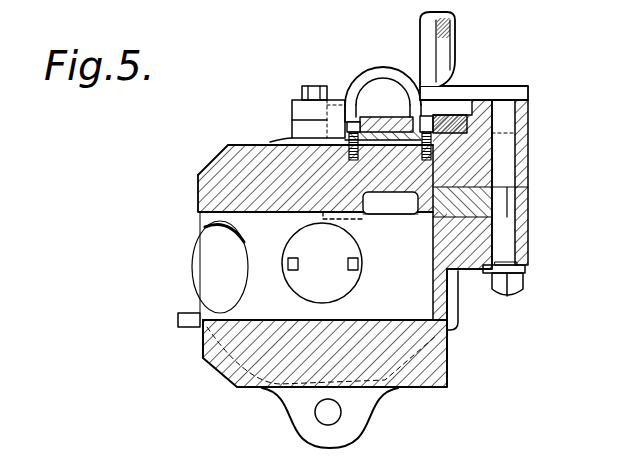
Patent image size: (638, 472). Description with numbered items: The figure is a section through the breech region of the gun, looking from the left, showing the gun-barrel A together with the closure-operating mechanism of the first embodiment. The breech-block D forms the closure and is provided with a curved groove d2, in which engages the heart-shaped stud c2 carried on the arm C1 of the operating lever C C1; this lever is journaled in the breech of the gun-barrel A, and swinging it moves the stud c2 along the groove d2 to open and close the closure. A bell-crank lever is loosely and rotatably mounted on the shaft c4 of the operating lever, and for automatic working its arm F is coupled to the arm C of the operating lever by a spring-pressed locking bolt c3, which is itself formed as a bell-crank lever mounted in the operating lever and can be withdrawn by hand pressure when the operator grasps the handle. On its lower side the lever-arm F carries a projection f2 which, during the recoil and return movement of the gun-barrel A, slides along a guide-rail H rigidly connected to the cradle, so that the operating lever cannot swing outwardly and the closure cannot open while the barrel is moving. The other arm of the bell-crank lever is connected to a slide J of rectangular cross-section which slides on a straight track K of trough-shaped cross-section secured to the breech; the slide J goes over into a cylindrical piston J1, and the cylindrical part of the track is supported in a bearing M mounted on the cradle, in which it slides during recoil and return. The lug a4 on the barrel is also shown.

The gun-barrel A is at (213, 173).
The breech-block D is at (252, 245).
The curved groove d2 is at (343, 219).
The arm of operating lever C1 is at (419, 200).
The heart-shaped stud c2 is at (384, 216).
The lug a4 is at (356, 418).
The bearing M is at (357, 88).
The slide J is at (352, 88).
The cylindrical piston J1 is at (390, 95).
The track K is at (347, 125).
The operating lever C is at (470, 100).
The arm of bell-crank lever F is at (508, 92).
The shaft of operating lever c4 is at (508, 170).
The guide-rail H is at (492, 133).
The projection f2 is at (440, 113).
The spring-pressed locking bolt c3 is at (451, 40).